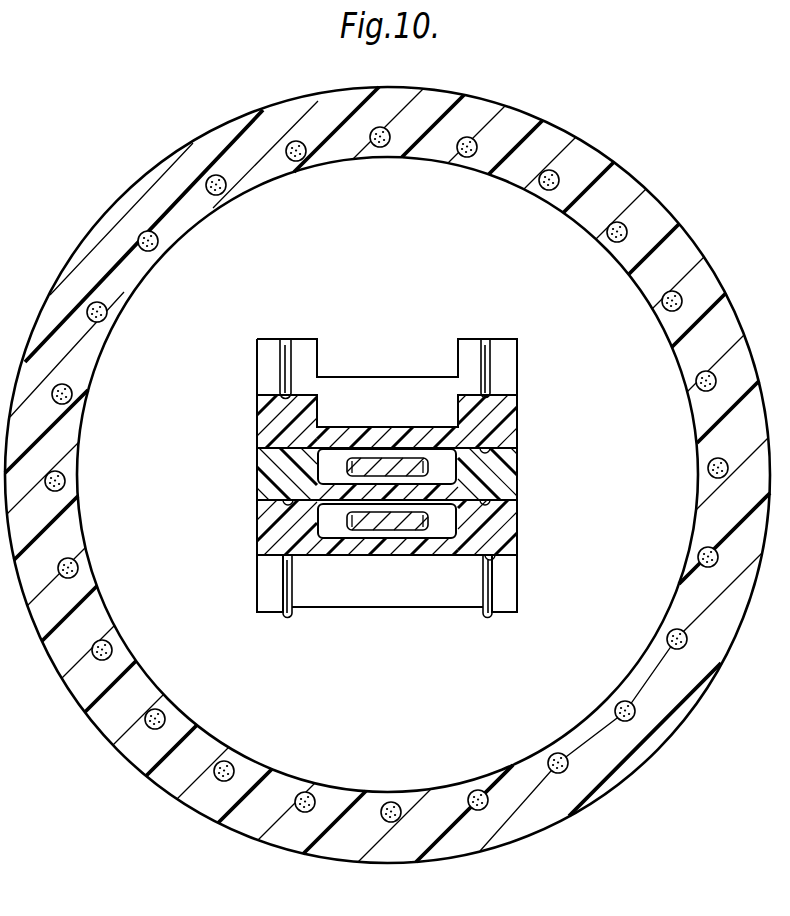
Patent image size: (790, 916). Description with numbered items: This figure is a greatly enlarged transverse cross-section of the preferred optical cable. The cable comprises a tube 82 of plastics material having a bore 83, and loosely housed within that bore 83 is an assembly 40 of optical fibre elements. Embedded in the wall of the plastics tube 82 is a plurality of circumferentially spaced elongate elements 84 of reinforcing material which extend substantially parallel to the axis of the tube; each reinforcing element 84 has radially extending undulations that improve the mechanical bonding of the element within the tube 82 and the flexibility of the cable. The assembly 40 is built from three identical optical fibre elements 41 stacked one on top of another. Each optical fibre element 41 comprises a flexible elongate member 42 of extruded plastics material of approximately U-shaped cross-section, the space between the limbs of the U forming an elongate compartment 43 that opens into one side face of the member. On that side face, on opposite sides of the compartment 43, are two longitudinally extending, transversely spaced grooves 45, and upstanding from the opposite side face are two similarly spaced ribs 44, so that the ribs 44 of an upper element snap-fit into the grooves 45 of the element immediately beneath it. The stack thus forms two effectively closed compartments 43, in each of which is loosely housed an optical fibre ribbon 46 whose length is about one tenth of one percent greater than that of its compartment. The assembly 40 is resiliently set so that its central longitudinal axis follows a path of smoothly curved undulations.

The assembly of optical fibre elements 40 is at (519, 585).
The optical fibre element 41 is at (258, 422).
The flexible elongate member 42 is at (480, 476).
The elongate compartment 43 is at (330, 521).
The rib 44 is at (289, 617).
The groove 45 is at (489, 393).
The optical fibre ribbon 46 is at (391, 460).
The tube 82 is at (135, 746).
The bore 83 is at (511, 745).
The elongate element of reinforcing material 84 is at (302, 810).